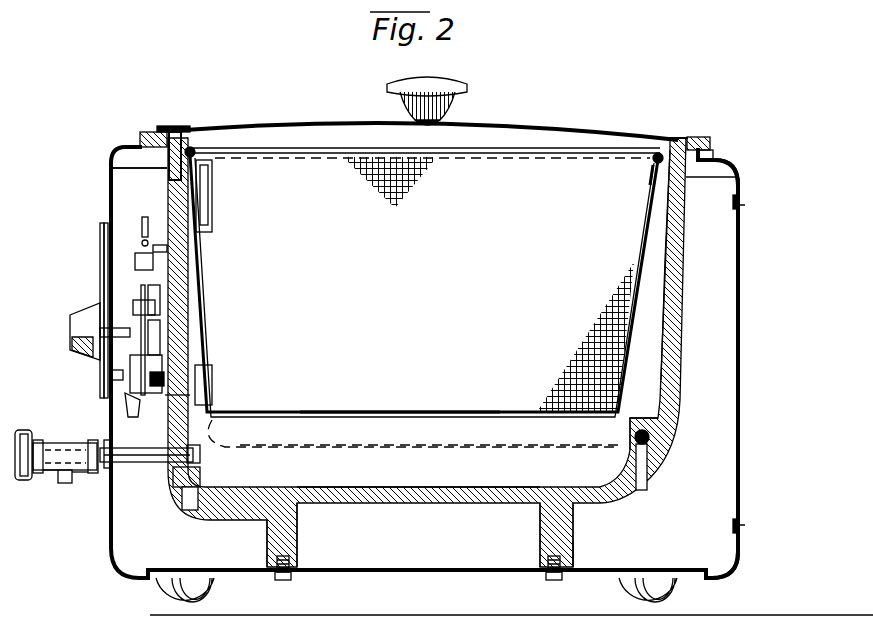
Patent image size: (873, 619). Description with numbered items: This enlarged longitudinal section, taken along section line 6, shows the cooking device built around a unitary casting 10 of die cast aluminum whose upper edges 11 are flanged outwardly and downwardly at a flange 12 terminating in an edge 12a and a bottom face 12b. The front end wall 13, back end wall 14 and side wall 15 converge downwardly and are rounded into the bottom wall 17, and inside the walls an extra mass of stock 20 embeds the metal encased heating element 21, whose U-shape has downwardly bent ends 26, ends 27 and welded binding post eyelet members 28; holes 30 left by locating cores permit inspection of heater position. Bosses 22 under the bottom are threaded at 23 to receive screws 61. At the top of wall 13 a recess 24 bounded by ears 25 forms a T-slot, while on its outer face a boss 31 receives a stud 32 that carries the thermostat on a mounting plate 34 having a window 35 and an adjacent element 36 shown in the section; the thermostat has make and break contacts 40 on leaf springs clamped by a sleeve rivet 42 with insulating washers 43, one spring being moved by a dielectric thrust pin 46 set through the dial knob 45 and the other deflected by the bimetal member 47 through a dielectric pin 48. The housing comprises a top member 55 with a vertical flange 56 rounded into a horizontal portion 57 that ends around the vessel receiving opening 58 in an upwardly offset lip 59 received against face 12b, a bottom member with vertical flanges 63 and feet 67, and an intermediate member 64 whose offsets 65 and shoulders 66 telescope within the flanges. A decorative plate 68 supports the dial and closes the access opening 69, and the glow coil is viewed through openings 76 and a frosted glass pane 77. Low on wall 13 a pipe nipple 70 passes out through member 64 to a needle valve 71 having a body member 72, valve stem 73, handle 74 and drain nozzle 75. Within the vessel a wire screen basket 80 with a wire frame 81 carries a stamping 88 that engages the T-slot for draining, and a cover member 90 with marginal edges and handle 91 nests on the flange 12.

The section line 6- 6 is at (93, 150).
The unitary casting 10 is at (681, 328).
The upper edges 11 is at (672, 140).
The flange 12 is at (713, 150).
The edge 12a is at (148, 140).
The bottom face 12b is at (150, 169).
The front end wall 13 is at (180, 250).
The back end wall 14 is at (682, 241).
The side wall 15 is at (668, 283).
The bottom wall 17 is at (410, 499).
The mass of metal or stock 20 is at (662, 420).
The heating element 21 is at (651, 437).
The bosses 22 is at (298, 524).
The threaded openings 23 is at (576, 555).
The recess 24 is at (183, 140).
The ears 25 is at (194, 148).
The downwardly bent ends 26 is at (213, 175).
The ends of the electric element 27 is at (196, 508).
The binding post eyelet members 28 is at (190, 510).
The holes 30 is at (648, 473).
The boss 31 is at (190, 355).
The stud 32 is at (205, 363).
The mounting plate 34 is at (200, 295).
The window 35 is at (195, 312).
The strip support 36 is at (195, 330).
The make and break contacts 40 is at (125, 318).
The sleeve rivet 42 is at (190, 396).
The electrical insulating washers 43 is at (100, 450).
The dial knob 45 is at (72, 335).
The dielectric thrust pin 46 is at (115, 350).
The bimetal member 47 is at (130, 303).
The dielectric pin 48 is at (190, 285).
The top member 55 is at (741, 165).
The vertical flange 56 is at (742, 192).
The horizontal portion 57 is at (736, 178).
The vessel receiving opening 58 is at (700, 137).
The upwardly offset lip 59 is at (160, 132).
The screws 61 is at (290, 580).
The vertical flanges 63 is at (741, 547).
The intermediate member 64 is at (741, 330).
The offsets 65 is at (735, 203).
The shoulders 66 is at (743, 208).
The feet 67 is at (163, 595).
The decorative plate 68 is at (122, 405).
The access opening 69 is at (118, 380).
The pipe nipple 70 is at (135, 464).
The needle valve 71 is at (80, 476).
The body member 72 is at (60, 445).
The valve stem 73 is at (48, 478).
The handle 74 is at (25, 432).
The drain nozzle 75 is at (63, 484).
The valve compartment 76 is at (100, 250).
The frosted glass pane 77 is at (100, 272).
The wire screen basket 80 is at (418, 410).
The wire frame 81 is at (653, 165).
The stamping 88 is at (213, 373).
The cover member 90 is at (505, 124).
The marginal edges / handle 91 is at (395, 98).